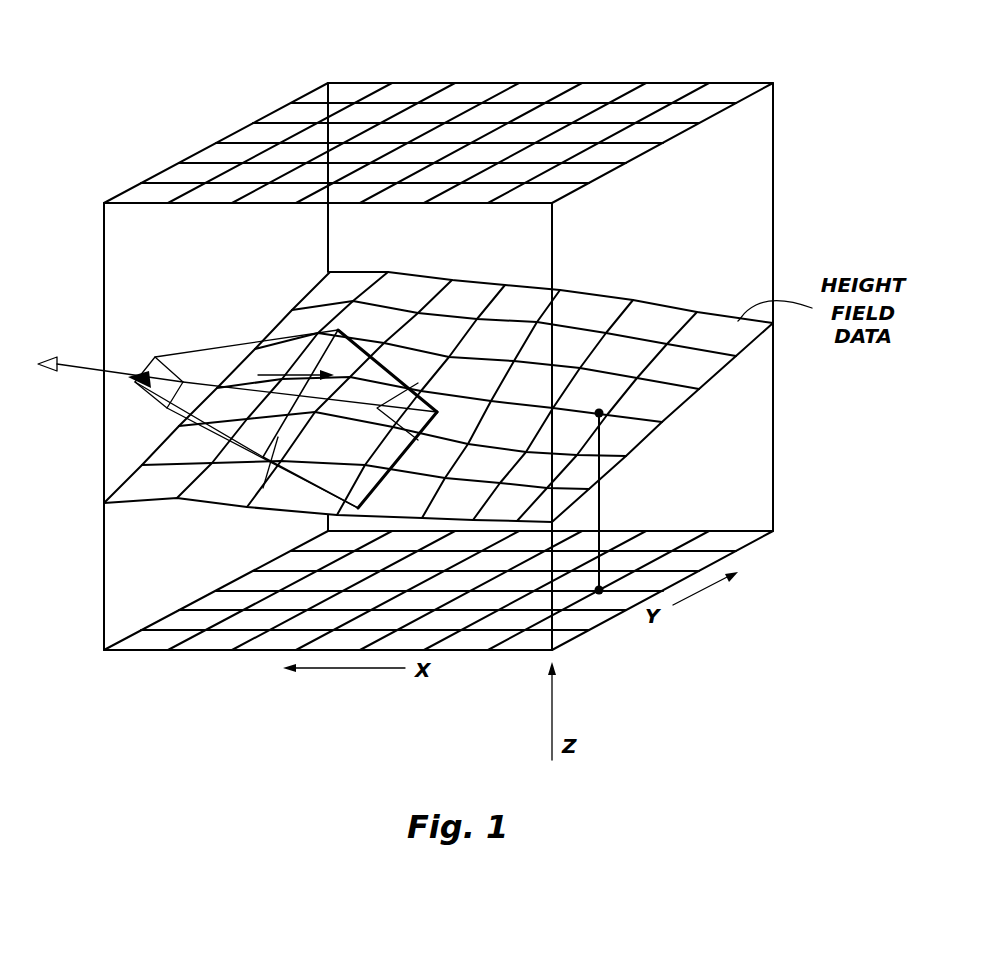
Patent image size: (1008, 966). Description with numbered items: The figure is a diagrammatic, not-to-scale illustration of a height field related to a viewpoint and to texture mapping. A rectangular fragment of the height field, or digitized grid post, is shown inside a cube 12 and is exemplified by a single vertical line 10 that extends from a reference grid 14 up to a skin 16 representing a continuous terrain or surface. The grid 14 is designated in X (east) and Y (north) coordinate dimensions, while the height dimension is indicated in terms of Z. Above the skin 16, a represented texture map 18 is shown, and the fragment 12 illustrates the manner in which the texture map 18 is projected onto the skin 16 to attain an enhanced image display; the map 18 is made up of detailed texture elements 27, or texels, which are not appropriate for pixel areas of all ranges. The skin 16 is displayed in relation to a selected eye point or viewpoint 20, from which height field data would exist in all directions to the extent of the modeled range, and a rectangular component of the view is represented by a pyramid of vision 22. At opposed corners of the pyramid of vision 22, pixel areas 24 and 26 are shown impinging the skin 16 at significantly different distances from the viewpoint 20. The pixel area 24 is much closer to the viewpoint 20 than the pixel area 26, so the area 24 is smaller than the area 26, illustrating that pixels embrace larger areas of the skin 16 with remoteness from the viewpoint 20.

The vertical line 10 is at (600, 508).
The cube 12 is at (778, 203).
The reference grid 14 is at (688, 557).
The skin 16 is at (675, 312).
The texture map 18 is at (600, 74).
The viewpoint 20 is at (47, 356).
The pyramid of vision 22 is at (220, 348).
The pixel area 24 is at (263, 488).
The pixel area 26 is at (418, 383).
The texture elements 27 is at (437, 112).